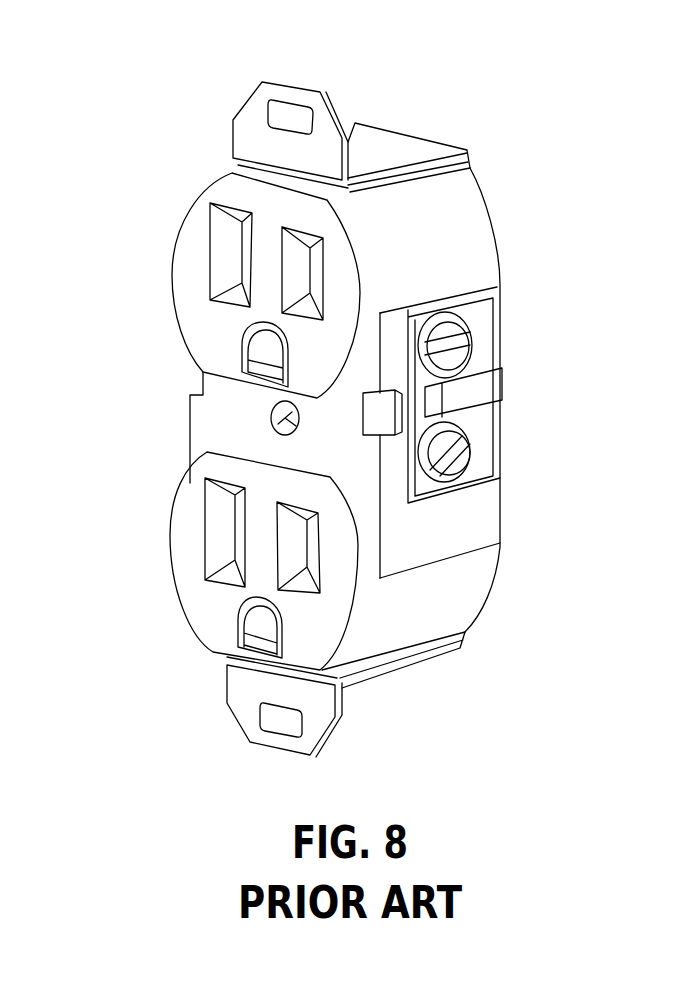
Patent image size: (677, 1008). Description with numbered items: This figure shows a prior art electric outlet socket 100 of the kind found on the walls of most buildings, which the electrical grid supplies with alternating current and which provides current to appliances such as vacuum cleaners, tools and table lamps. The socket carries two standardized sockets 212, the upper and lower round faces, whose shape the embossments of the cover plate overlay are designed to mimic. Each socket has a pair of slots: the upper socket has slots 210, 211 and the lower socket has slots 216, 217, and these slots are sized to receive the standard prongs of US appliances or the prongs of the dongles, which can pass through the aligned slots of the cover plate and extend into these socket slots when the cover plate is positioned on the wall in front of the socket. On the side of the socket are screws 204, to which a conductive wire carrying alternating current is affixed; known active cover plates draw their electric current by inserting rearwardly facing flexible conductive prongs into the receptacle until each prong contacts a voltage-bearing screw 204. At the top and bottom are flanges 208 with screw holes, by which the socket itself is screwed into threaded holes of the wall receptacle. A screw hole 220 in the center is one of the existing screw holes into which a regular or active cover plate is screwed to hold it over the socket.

The prior art duplex electrical receptacle 100 is at (539, 163).
The screws 204 is at (473, 322).
The flanges 208 is at (264, 95).
The slot 210 is at (255, 248).
The slot 211 is at (310, 267).
The sockets 212 is at (198, 322).
The slot 216 is at (240, 527).
The slot 217 is at (305, 566).
The screw holes 220 is at (270, 417).